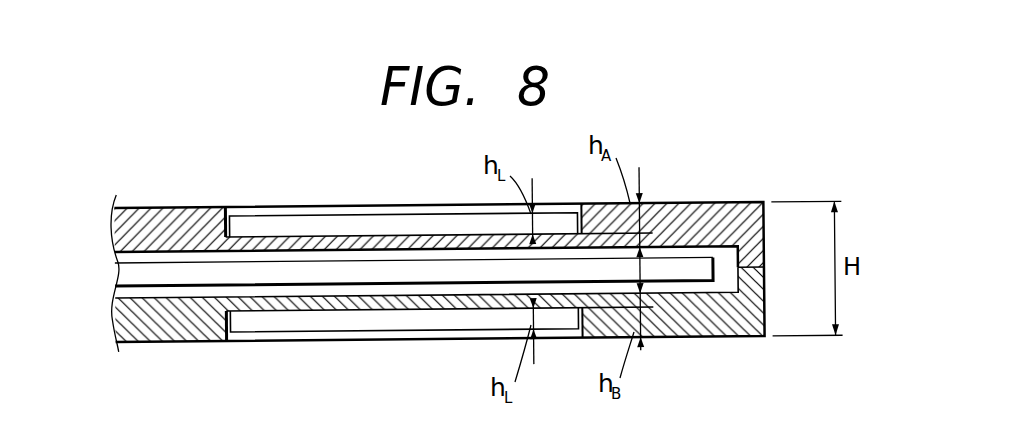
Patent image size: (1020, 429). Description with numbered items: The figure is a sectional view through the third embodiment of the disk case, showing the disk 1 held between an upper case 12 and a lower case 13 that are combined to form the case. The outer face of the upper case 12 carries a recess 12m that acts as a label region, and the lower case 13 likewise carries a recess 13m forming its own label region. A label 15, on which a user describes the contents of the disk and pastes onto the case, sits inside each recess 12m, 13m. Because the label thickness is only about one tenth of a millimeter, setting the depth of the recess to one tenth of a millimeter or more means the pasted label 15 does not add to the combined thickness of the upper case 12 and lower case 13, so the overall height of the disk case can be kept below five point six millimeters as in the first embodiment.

The disk 1 is at (398, 260).
The upper case 12 is at (193, 207).
The recess of the upper case 12m is at (229, 209).
The lower case 13 is at (195, 344).
The recess of the lower case 13m is at (229, 343).
The label 15 is at (330, 214).